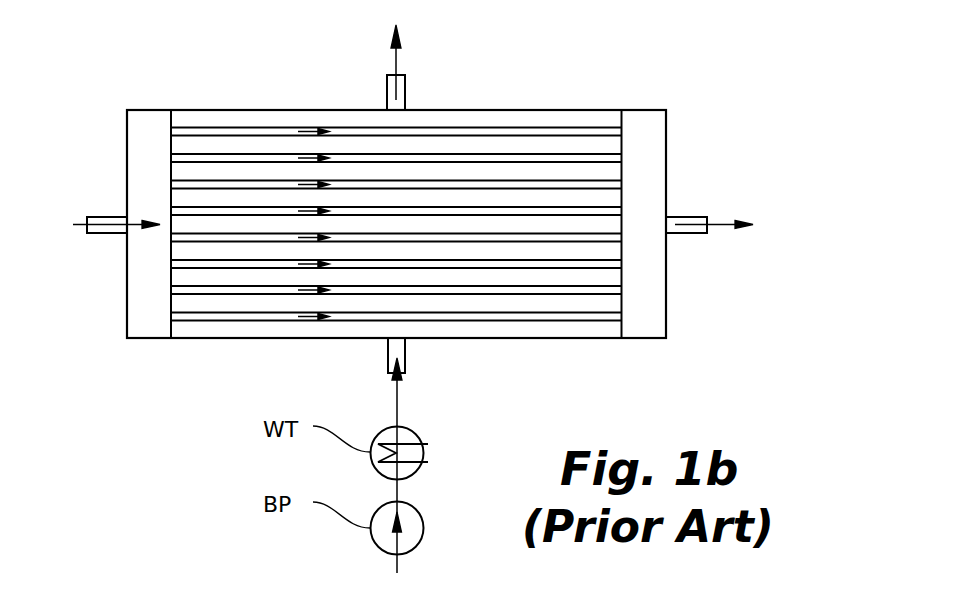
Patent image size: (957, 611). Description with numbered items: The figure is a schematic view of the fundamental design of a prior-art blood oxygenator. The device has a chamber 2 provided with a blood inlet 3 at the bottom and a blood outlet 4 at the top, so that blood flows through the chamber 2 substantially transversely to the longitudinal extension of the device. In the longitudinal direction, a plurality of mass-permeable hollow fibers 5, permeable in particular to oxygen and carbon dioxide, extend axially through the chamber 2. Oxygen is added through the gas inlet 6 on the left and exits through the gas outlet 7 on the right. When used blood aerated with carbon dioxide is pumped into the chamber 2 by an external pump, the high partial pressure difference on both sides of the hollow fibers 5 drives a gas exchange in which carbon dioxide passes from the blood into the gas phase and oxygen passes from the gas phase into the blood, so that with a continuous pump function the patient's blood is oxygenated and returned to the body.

The chamber 2 is at (560, 120).
The blood inlet 3 is at (413, 365).
The blood outlet 4 is at (403, 62).
The hollow fibers 5 is at (613, 157).
The gas inlet 6 is at (108, 237).
The gas outlet 7 is at (683, 237).